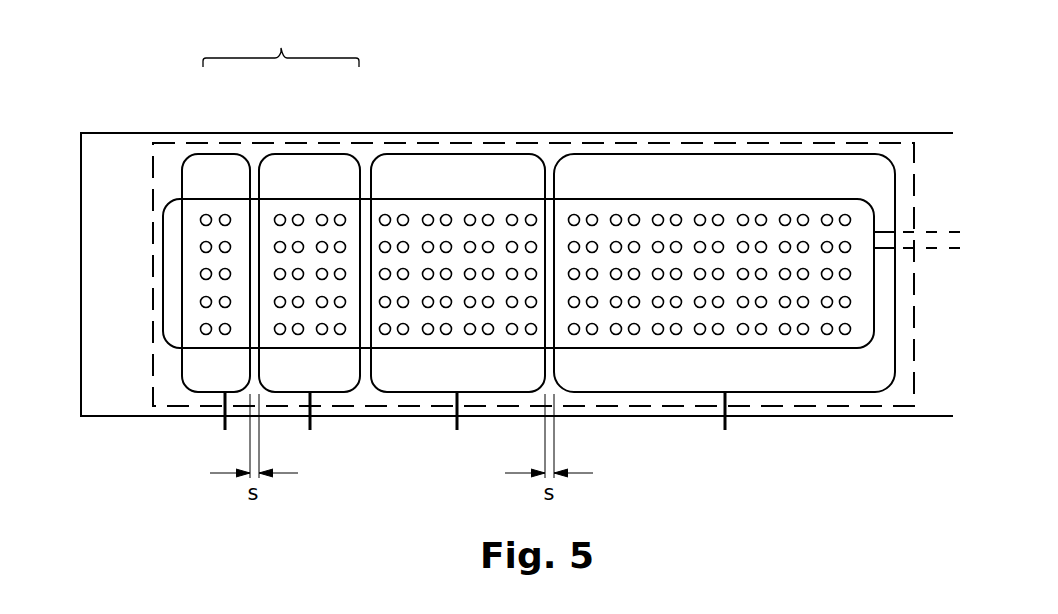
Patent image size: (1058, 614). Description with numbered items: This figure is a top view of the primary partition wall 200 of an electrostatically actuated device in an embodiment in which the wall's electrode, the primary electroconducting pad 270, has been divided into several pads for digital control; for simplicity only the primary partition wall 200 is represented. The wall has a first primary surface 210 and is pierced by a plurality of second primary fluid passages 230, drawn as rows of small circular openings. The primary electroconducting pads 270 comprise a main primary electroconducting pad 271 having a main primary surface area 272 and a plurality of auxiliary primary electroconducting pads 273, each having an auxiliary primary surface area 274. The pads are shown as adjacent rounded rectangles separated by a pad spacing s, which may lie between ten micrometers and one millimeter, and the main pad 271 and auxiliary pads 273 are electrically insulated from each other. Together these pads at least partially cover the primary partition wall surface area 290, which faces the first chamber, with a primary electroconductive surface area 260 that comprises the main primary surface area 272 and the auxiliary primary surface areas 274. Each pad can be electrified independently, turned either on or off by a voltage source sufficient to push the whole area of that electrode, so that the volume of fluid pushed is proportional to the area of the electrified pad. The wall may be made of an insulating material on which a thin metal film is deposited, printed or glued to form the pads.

The primary partition wall 200 is at (81, 167).
The first primary surface 210 is at (112, 390).
The second primary fluid passages 230 is at (655, 335).
The primary electroconductive surface area 260 is at (914, 362).
The primary electroconducting pads 270 is at (281, 43).
The main primary electroconducting pad 271 is at (215, 156).
The main primary surface area 272 is at (243, 189).
The auxiliary primary electroconducting pad 273 is at (392, 156).
The auxiliary primary surface area 274 is at (285, 189).
The primary partition wall surface area 290 is at (96, 277).